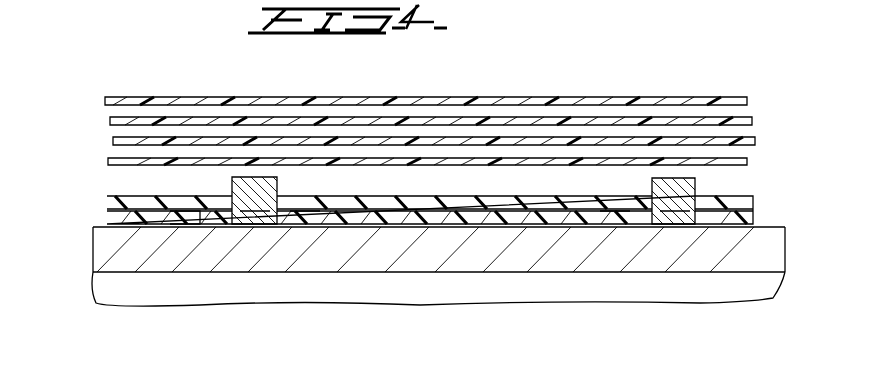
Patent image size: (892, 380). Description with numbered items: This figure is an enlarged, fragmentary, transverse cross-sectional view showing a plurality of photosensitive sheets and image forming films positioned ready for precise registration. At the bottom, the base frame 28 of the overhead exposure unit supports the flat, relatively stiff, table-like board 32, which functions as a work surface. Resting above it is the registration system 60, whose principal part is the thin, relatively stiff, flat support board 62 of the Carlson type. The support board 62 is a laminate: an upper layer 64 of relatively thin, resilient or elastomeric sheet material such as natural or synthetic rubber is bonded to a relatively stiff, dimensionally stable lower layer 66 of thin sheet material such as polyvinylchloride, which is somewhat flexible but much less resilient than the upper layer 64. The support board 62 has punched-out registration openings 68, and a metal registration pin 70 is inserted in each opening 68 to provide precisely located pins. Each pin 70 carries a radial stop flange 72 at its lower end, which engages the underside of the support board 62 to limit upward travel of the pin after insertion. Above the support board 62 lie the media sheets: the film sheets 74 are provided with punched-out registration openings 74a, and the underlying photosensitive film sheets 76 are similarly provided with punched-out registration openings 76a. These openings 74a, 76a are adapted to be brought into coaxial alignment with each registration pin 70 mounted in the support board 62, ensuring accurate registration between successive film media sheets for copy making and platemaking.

The frame 28 is at (741, 290).
The board 32 is at (773, 246).
The registration system 60 is at (427, 235).
The support board 62 is at (106, 208).
The upper layer 64 is at (113, 197).
The lower layer 66 is at (182, 212).
The registration opening 68 is at (263, 208).
The registration pin 70 is at (245, 200).
The radial stop flange 72 is at (298, 218).
The film sheet 74 is at (451, 99).
The registration opening 74a is at (242, 124).
The photosensitive film sheet 76 is at (454, 164).
The registration opening 76a is at (263, 141).